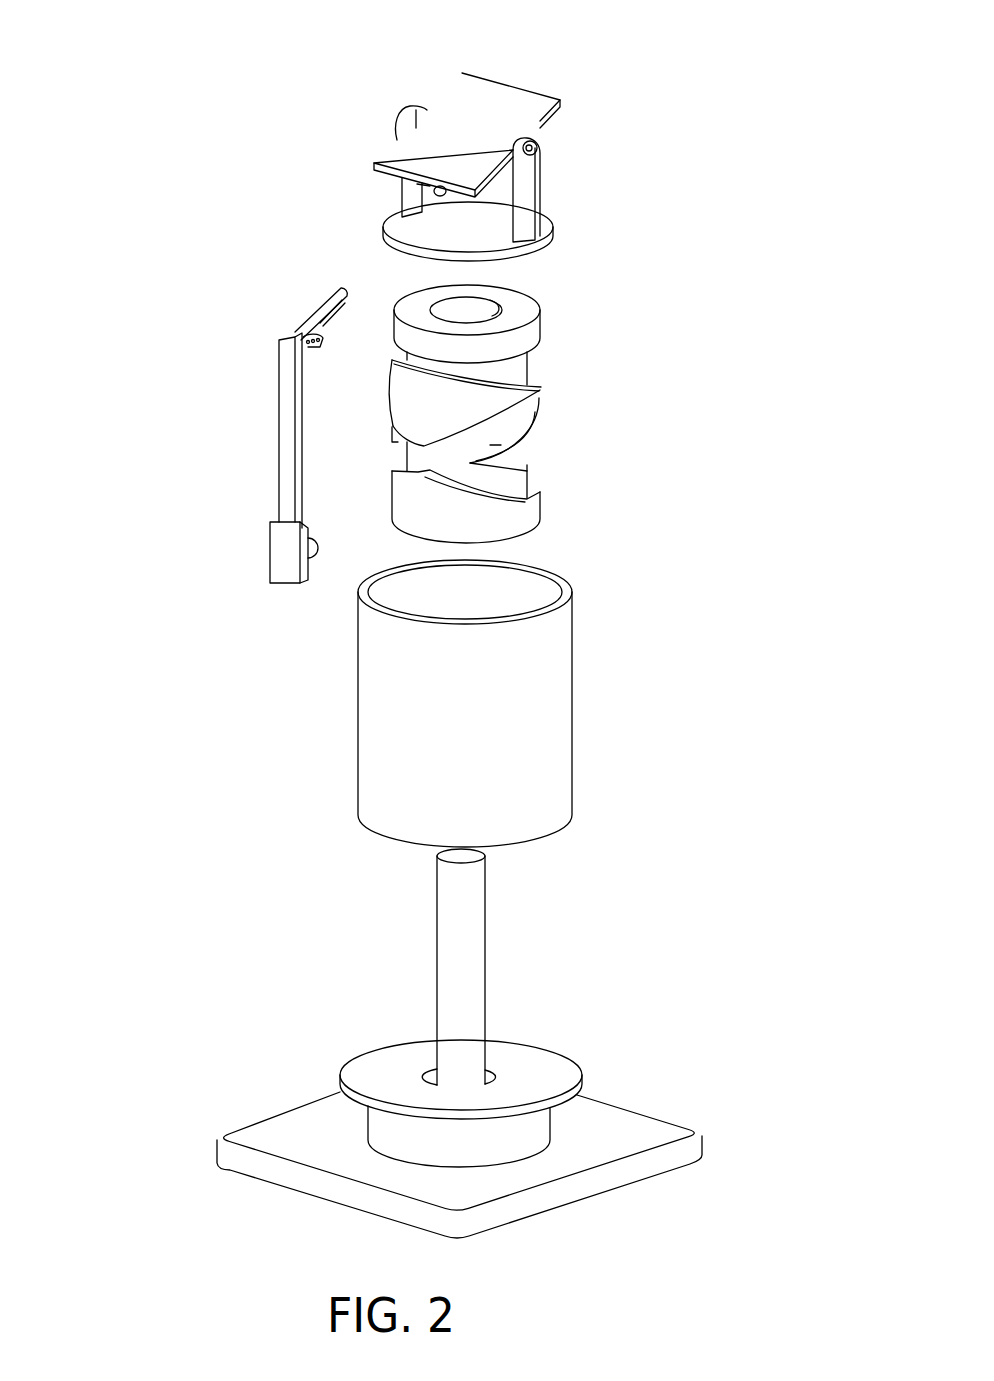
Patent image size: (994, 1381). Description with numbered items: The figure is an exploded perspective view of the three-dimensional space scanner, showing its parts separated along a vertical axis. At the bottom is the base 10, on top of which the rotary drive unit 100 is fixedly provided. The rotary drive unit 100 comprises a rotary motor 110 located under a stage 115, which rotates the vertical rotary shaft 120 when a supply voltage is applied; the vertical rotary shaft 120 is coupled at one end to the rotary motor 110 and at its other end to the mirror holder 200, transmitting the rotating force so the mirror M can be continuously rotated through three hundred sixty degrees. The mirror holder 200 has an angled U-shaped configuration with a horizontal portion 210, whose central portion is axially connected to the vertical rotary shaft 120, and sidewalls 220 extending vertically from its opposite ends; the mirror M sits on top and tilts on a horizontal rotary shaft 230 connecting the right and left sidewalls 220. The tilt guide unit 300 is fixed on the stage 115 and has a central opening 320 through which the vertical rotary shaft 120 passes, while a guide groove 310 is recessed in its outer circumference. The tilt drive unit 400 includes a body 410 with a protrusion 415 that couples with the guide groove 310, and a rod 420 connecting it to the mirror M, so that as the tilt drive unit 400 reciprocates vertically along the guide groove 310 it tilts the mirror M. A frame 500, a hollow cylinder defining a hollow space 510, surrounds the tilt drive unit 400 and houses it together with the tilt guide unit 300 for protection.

The mirror M is at (502, 92).
The base 10 is at (292, 1158).
The rotary drive unit 100 is at (509, 1008).
The rotary motor 110 is at (540, 1130).
The stage 115 is at (357, 1070).
The vertical rotary shaft 120 is at (472, 977).
The mirror holder 200 is at (563, 183).
The horizontal portion 210 is at (544, 227).
The sidewalls 220 is at (536, 183).
The horizontal rotary shaft 230 is at (540, 149).
The tilt guide unit 300 is at (513, 414).
The guide groove 310 is at (534, 430).
The central opening 320 is at (492, 313).
The tilt drive unit 400 is at (197, 442).
The body 410 is at (283, 565).
The protrusion 415 is at (318, 552).
The rod 420 is at (286, 487).
The frame 500 is at (510, 703).
The hollow space 510 is at (518, 600).